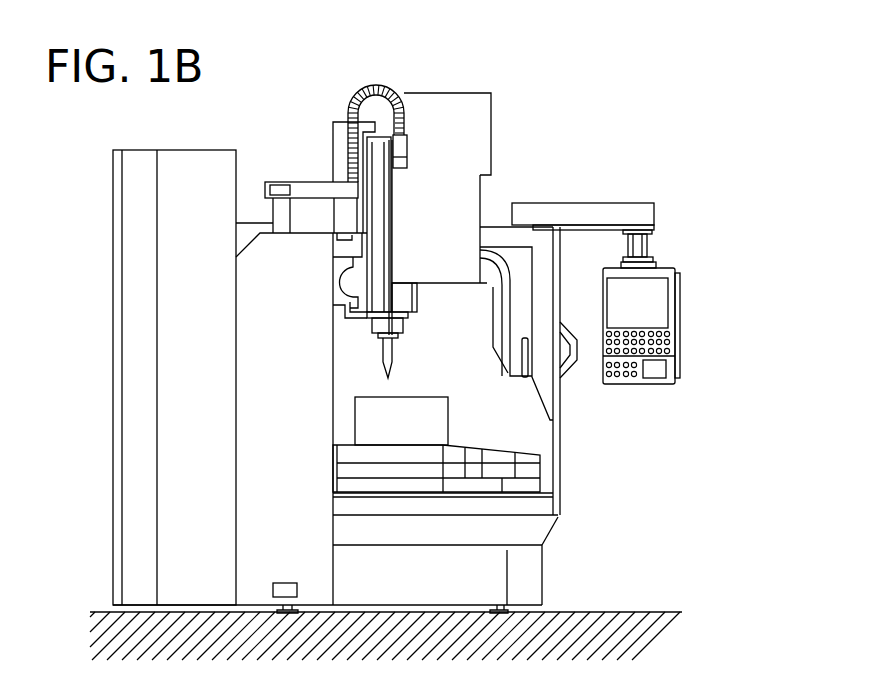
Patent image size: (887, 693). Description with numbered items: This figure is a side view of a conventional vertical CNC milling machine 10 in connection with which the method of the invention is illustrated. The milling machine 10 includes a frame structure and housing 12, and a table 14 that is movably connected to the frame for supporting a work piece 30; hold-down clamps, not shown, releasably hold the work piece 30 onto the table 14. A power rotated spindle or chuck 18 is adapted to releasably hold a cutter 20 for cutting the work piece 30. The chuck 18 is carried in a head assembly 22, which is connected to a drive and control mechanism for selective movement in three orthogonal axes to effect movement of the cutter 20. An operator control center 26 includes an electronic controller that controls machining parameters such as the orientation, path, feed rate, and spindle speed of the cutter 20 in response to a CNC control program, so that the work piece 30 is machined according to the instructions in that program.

The vertical CNC milling machine 10 is at (650, 83).
The frame structure and housing 12 is at (173, 148).
The table 14 is at (540, 474).
The spindle or chuck 18 is at (402, 323).
The cutter 20 is at (393, 358).
The head assembly 22 is at (358, 230).
The operator control center 26 is at (681, 300).
The work piece 30 is at (448, 407).